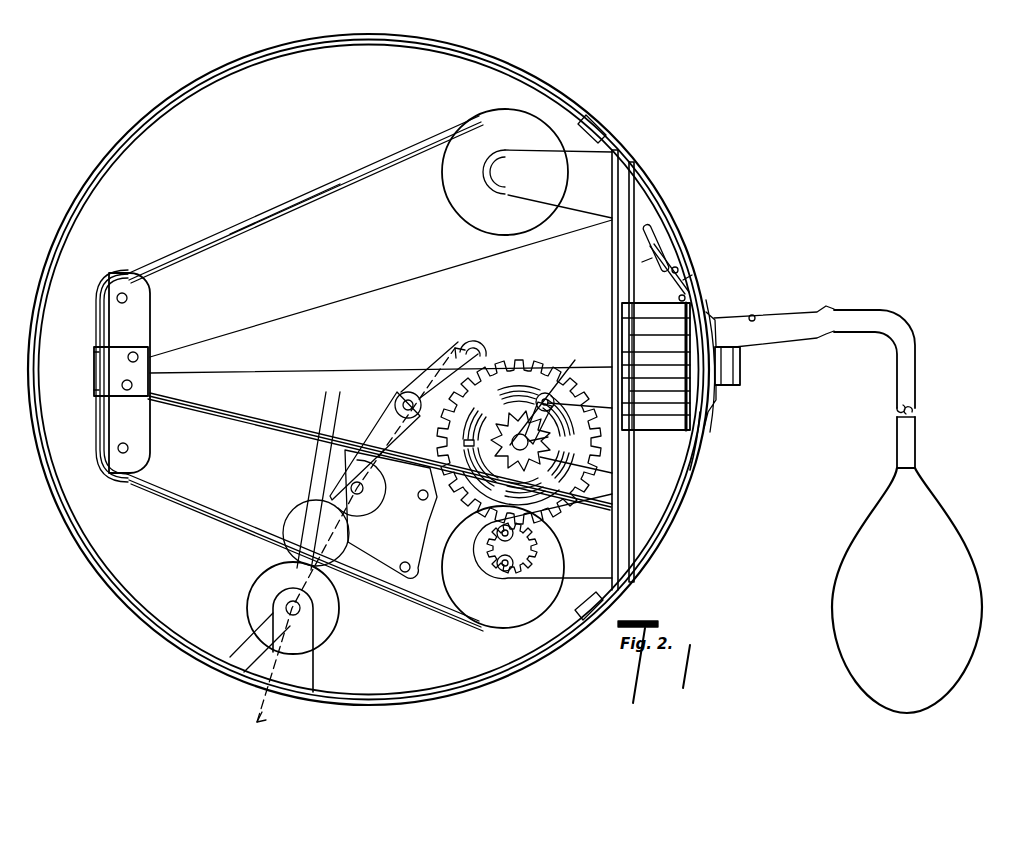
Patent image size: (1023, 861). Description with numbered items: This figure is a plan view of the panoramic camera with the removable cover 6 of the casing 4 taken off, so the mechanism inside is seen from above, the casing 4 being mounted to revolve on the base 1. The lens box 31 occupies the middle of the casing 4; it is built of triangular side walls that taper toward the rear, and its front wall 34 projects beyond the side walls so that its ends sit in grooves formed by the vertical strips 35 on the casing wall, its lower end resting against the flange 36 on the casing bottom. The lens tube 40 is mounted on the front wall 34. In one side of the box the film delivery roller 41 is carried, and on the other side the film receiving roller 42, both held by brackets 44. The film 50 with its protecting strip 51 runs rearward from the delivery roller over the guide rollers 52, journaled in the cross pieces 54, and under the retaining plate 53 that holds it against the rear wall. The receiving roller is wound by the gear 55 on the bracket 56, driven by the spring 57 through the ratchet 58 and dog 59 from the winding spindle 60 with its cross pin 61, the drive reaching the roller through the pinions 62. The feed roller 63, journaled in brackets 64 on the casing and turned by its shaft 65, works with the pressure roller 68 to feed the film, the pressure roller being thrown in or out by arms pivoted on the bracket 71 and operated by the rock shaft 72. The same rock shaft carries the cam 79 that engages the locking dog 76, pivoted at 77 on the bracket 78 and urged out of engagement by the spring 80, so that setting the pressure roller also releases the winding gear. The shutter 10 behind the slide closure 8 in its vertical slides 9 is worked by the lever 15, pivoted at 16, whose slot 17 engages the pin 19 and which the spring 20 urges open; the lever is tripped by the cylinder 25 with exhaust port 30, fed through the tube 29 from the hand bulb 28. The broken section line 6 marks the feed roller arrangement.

The base 1 is at (478, 684).
The casing 4 is at (58, 508).
The removable cover 6 is at (262, 722).
The slide closure 8 is at (734, 366).
The vertical slides 9 is at (712, 320).
The shutter 10 is at (712, 422).
The lever 15 is at (641, 263).
The pivot 16 is at (658, 248).
The slot 17 is at (658, 279).
The pin 19 is at (669, 276).
The spring 20 is at (683, 280).
The cylinder 25 is at (782, 318).
The hand bulb 28 is at (850, 587).
The tube 29 is at (900, 340).
The exhaust port 30 is at (754, 316).
The lens box 31 is at (416, 292).
The front wall 34 is at (612, 262).
The vertical strips 35 is at (604, 128).
The upwardly-projecting flange 36 is at (612, 500).
The lens tube 40 is at (662, 432).
The film delivery roller 41 is at (458, 178).
The film receiving roller 42 is at (472, 600).
The brackets 44 is at (548, 150).
The film 50 is at (296, 206).
The protecting strip 51 is at (244, 226).
The guide rollers 52 is at (114, 298).
The retaining plate 53 is at (100, 372).
The cross pieces 54 is at (148, 418).
The gear 55 is at (542, 376).
The bracket 56 is at (612, 455).
The spring 57 is at (548, 392).
The ratchet 58 is at (555, 395).
The dog 59 is at (576, 398).
The winding spindle 60 is at (529, 445).
The cross pin 61 is at (548, 436).
The pinions 62 is at (496, 561).
The feed roller 63 is at (332, 600).
The brackets 64 is at (304, 650).
The shaft 65 is at (284, 608).
The pressure roller 68 is at (292, 518).
The bracket 71 is at (326, 474).
The rock shaft 72 is at (364, 488).
The locking dog 76 is at (486, 350).
The pivot 77 is at (396, 404).
The bracket 78 is at (394, 426).
The cam 79 is at (370, 505).
The spring 80 is at (450, 372).